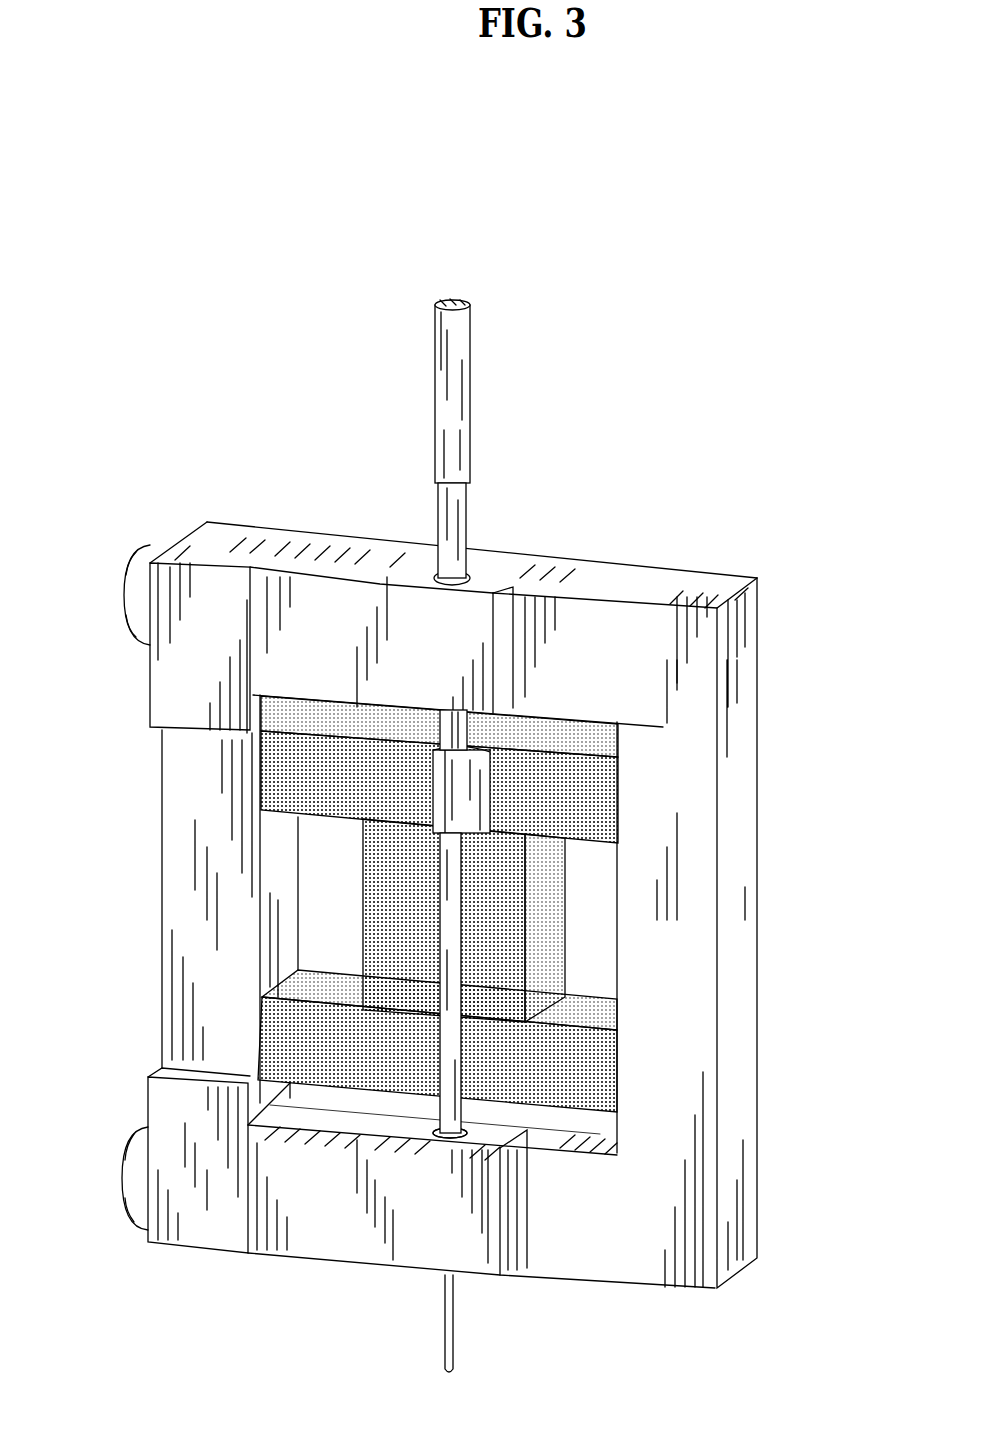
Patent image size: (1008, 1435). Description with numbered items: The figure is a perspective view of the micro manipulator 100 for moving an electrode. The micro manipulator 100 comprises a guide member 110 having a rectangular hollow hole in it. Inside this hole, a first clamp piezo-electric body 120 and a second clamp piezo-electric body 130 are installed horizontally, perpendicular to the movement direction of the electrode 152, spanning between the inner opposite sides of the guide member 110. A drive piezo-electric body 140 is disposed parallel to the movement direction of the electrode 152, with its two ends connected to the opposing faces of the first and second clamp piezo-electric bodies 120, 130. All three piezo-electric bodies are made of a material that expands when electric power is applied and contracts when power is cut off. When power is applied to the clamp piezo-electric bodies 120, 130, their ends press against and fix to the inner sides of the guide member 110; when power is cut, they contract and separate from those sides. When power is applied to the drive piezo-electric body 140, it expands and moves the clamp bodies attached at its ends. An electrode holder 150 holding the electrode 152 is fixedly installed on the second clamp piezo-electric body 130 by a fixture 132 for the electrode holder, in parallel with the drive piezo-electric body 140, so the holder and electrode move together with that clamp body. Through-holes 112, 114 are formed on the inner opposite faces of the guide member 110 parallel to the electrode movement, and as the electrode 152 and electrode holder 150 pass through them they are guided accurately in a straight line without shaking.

The micro manipulator 100 is at (728, 312).
The guide member 110 is at (198, 780).
The through-hole 112 is at (466, 574).
The through-hole 114 is at (470, 1133).
The first clamp piezo-electric body 120 is at (285, 1038).
The second clamp piezo-electric body 130 is at (575, 795).
The fixture for electrode holder 132 is at (493, 772).
The drive piezo-electric body 140 is at (540, 900).
The electrode holder 150 is at (438, 512).
The electrode 152 is at (445, 1322).